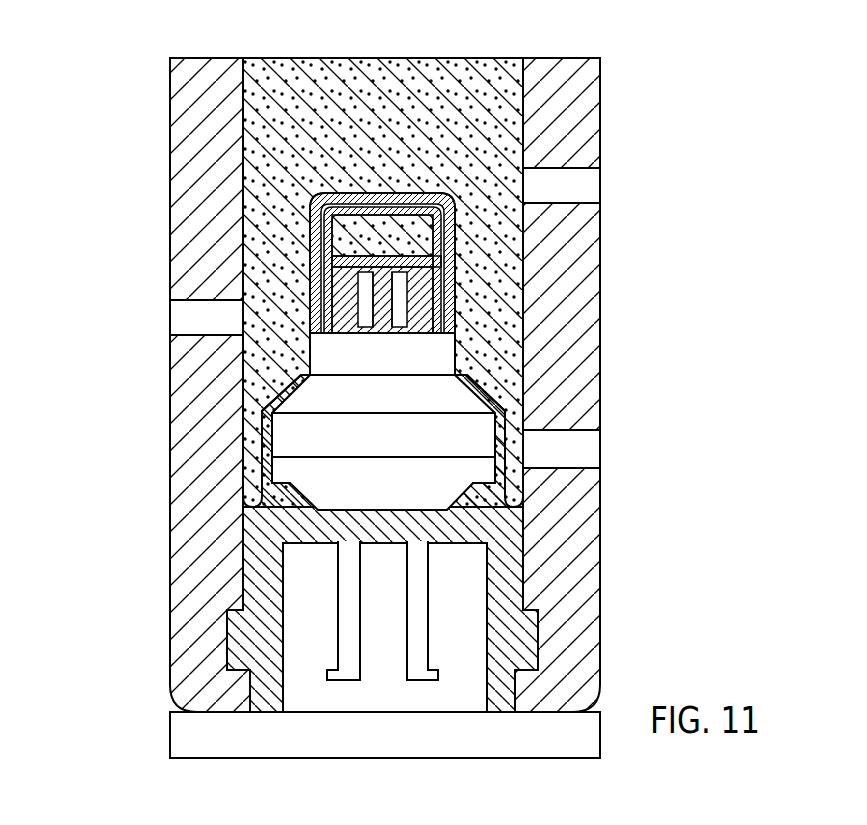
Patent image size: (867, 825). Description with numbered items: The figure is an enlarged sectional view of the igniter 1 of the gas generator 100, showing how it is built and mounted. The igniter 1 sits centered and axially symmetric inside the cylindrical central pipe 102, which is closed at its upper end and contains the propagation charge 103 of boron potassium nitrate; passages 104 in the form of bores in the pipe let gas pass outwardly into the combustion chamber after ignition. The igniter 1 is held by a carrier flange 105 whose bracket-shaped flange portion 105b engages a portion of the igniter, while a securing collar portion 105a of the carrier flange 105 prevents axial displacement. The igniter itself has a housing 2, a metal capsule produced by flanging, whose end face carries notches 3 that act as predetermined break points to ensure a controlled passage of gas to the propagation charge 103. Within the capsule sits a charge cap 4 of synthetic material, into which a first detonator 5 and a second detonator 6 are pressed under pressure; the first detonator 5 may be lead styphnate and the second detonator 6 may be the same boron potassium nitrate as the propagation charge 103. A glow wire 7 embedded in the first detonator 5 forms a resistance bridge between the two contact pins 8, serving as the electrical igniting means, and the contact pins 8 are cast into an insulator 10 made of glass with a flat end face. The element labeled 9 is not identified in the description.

The igniter 1 is at (278, 430).
The housing 2 is at (453, 228).
The notches 3 is at (359, 193).
The charge cap 4 is at (330, 316).
The first detonator 5 is at (335, 262).
The second detonator 6 is at (330, 233).
The glow wire 7 is at (443, 264).
The contact pins 8 is at (398, 333).
The terminal pins 9 is at (408, 670).
The insulator 10 is at (352, 333).
The gas generator 100 is at (180, 729).
The central pipe 102 is at (575, 324).
The propagation charge 103 is at (503, 132).
The passages 104 is at (545, 452).
The carrier flange 105 is at (500, 573).
The securing collar portion 105a is at (232, 633).
The bracket-shaped flange portion 105b is at (497, 393).